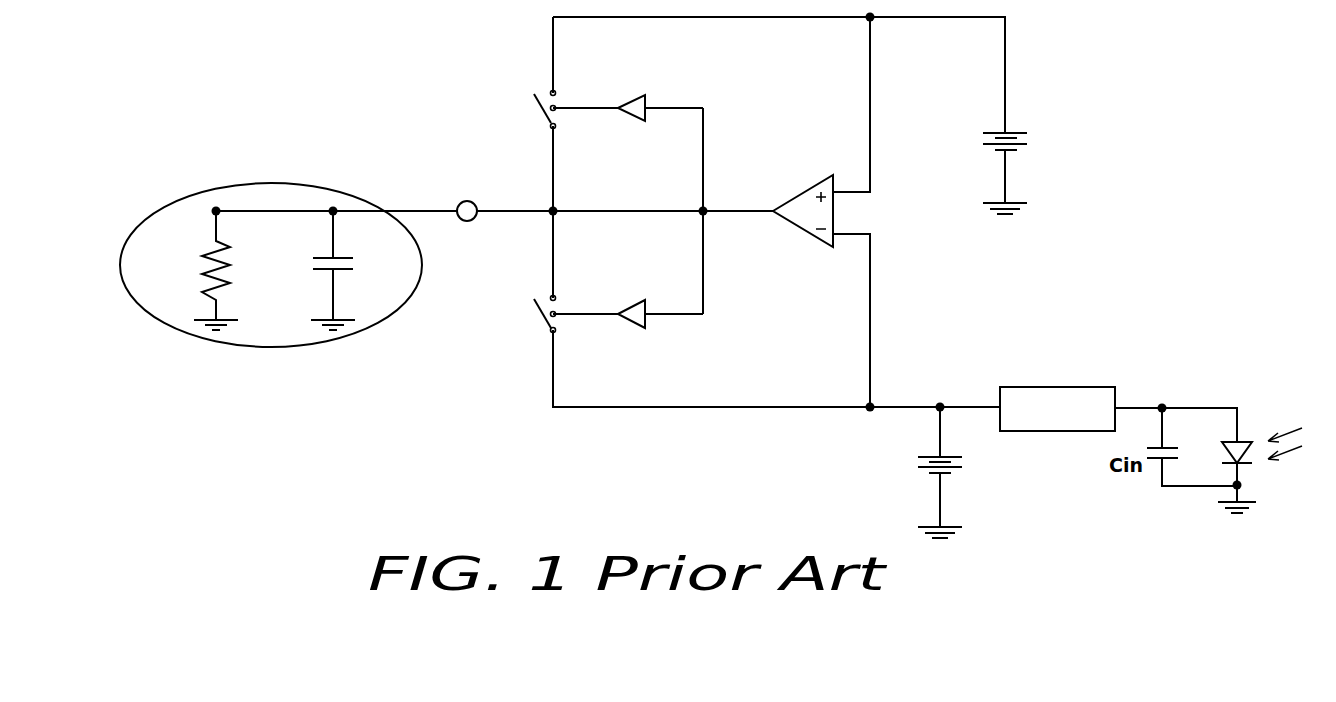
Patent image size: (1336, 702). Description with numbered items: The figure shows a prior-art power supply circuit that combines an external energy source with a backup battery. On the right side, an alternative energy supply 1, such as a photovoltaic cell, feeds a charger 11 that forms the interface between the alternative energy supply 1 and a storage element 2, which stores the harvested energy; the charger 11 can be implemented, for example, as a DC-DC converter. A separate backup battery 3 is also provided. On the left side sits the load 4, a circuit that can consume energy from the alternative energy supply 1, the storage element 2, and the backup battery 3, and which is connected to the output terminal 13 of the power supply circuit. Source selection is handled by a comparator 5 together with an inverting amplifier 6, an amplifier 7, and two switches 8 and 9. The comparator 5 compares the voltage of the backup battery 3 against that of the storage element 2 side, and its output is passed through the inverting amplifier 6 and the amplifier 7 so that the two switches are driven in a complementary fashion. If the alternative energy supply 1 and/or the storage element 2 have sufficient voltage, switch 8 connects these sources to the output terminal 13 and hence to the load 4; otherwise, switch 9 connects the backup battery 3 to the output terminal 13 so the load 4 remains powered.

The alternative energy supply 1 is at (1246, 440).
The storage element 2 is at (970, 463).
The backup battery 3 is at (1033, 139).
The load 4 is at (325, 190).
The comparator 5 is at (793, 229).
The inverting amplifier 6 is at (634, 93).
The amplifier 7 is at (634, 299).
The switch 8 is at (531, 311).
The switch 9 is at (531, 105).
The charger 11 is at (1050, 387).
The output terminal 13 is at (465, 200).